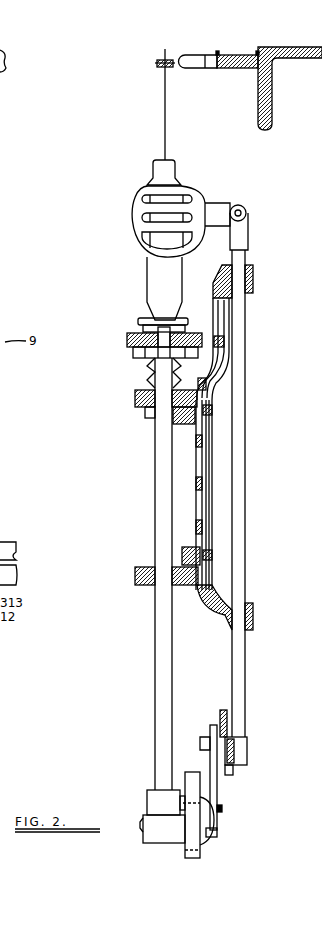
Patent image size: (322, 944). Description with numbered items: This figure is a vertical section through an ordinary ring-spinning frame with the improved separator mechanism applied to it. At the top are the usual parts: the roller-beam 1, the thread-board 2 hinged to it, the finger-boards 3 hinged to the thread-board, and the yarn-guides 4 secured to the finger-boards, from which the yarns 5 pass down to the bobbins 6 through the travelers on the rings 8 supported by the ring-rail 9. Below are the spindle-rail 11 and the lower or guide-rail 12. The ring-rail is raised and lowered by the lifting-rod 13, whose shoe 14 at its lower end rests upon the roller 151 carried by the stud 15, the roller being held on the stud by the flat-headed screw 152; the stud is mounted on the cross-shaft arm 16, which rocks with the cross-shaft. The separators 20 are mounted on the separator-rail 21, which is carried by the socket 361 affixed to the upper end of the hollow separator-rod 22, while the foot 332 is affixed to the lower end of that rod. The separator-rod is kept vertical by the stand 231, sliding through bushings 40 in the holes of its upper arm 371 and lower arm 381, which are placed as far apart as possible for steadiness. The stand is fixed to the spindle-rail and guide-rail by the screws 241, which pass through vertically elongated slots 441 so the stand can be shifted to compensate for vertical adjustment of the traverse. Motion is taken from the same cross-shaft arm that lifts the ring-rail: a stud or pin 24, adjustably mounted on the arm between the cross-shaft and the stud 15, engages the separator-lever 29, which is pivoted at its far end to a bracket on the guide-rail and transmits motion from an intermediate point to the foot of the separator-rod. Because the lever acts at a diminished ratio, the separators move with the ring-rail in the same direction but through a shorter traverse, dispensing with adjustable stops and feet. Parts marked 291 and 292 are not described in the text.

The roller-beam 1 is at (257, 112).
The thread-board 2 is at (238, 70).
The finger-boards 3 is at (196, 70).
The yarn-guides 4 is at (155, 64).
The yarns 5 is at (163, 102).
The bobbins 6 is at (157, 160).
The separators 20 is at (137, 206).
The separator-rail 21 is at (241, 205).
The socket 361 is at (249, 240).
The separator-rod 22 is at (246, 445).
The bushing 40 is at (254, 287).
The arm of the stand 371 is at (220, 283).
The rings 8 is at (141, 322).
The ring-rail 9 is at (125, 340).
The spindle-rail 11 is at (133, 402).
The lifting-rod 13 is at (160, 642).
The stand 231 is at (194, 488).
The vertically elongated slots 441 is at (203, 432).
The screws 241 is at (214, 410).
The lower or guide-rail 12 is at (137, 585).
The arm of the stand 381 is at (211, 616).
The separator-lever 29 is at (222, 722).
The foot 332 is at (249, 750).
The connector 292 is at (234, 770).
The bar 291 is at (218, 798).
The stud or pin 24 is at (223, 809).
The cross-shaft arm 16 is at (194, 770).
The stud 15 is at (218, 833).
The shoe 14 is at (166, 802).
The roller 151 is at (164, 829).
The flat-headed screw 152 is at (141, 821).